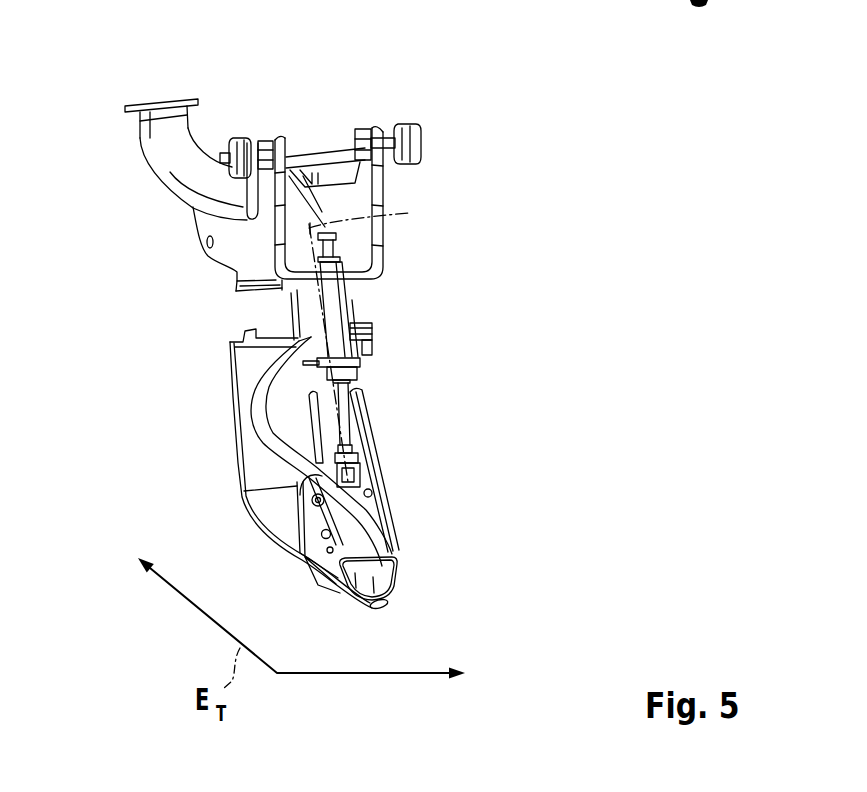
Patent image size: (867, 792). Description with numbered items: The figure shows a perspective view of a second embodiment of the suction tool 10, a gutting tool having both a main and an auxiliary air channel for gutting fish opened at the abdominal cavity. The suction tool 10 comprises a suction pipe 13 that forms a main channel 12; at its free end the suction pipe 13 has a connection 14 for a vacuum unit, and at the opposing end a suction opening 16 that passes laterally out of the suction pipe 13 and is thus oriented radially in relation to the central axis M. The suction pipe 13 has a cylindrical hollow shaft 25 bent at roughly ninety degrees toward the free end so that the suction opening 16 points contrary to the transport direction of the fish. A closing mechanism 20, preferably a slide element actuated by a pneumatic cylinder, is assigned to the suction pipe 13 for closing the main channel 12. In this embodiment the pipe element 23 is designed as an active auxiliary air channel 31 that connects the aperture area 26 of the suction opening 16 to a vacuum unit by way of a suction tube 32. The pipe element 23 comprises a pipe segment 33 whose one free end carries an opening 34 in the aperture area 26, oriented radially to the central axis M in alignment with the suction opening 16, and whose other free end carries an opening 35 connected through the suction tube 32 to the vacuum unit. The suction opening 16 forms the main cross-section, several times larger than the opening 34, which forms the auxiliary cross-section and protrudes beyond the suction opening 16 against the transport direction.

The suction tool 10 is at (626, 229).
The main channel 12 is at (300, 311).
The suction pipe 13 is at (278, 320).
The connection 14 is at (165, 136).
The suction opening 16 is at (394, 588).
The closing mechanism 20 is at (372, 380).
The pipe element 23 is at (400, 535).
The hollow shaft 25 is at (259, 285).
The aperture area 26 is at (352, 592).
The active auxiliary air channel 31 is at (373, 593).
The suction tube 32 is at (300, 475).
The pipe segment 33 is at (383, 567).
The opening 34 is at (380, 607).
The opening 35 is at (375, 539).
The central axis M is at (372, 213).